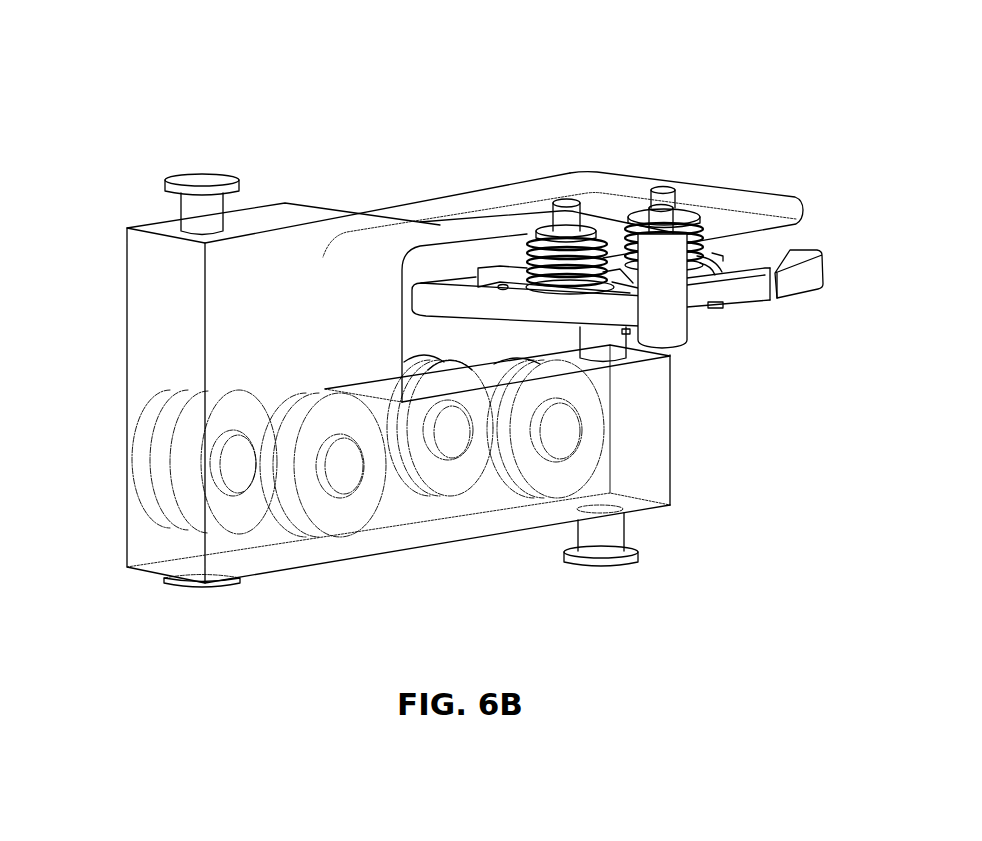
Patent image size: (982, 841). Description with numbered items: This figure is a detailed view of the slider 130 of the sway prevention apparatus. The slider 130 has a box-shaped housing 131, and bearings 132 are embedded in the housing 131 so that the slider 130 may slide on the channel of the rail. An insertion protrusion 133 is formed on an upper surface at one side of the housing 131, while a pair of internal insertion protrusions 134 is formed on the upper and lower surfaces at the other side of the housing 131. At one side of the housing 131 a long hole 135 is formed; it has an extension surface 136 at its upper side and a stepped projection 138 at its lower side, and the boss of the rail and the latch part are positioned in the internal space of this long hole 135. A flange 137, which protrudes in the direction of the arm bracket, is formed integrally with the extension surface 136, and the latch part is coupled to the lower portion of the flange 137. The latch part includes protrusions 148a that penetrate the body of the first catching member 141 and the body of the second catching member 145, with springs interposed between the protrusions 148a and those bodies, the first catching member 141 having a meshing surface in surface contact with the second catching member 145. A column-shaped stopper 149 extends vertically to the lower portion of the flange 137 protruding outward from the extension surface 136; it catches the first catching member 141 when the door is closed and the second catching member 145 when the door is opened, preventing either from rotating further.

The slider 130 is at (348, 176).
The housing 131 is at (218, 326).
The bearings 132 is at (305, 522).
The insertion protrusion 133 is at (200, 178).
The internal insertion protrusions 134 is at (617, 354).
The long hole 135 is at (440, 340).
The extension surface 136 is at (492, 190).
The flange 137 is at (610, 185).
The stepped projection 138 is at (670, 352).
The first catching member 141 is at (483, 342).
The second catching member 145 is at (813, 283).
The protrusions 148a is at (565, 200).
The stopper 149 is at (667, 265).